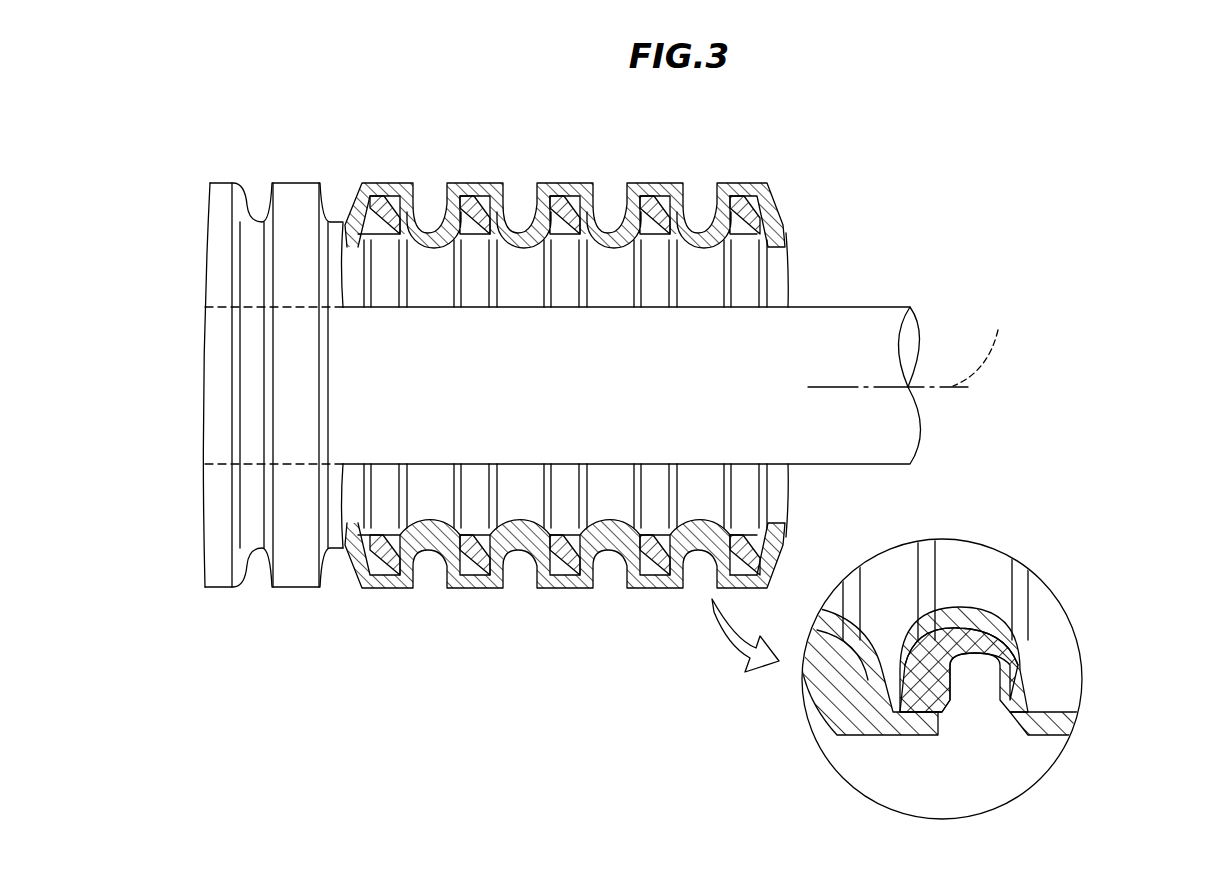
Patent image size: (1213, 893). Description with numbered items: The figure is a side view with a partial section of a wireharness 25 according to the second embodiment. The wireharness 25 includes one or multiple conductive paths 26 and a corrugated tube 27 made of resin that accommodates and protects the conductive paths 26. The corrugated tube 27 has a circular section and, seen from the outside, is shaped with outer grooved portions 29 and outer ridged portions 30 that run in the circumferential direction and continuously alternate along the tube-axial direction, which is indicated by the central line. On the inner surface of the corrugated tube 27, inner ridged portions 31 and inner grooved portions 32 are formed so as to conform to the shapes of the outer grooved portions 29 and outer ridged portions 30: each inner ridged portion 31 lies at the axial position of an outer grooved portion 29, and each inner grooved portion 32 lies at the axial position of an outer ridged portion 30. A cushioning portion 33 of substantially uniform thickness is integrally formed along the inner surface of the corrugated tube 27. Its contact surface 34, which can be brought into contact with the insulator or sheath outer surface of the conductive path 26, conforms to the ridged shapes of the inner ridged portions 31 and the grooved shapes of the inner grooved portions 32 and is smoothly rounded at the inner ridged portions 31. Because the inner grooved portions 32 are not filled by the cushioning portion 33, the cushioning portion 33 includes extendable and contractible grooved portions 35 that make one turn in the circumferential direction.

The wireharness 25 is at (912, 197).
The conductive path 26 is at (878, 422).
The corrugated tube 27 is at (298, 183).
The outer grooved portion 29 is at (697, 205).
The outer ridged portion 30 is at (748, 182).
The inner ridged portion 31 is at (695, 248).
The inner grooved portion 32 is at (760, 208).
The cushioning portion 33 is at (733, 243).
The contact surface 34 is at (699, 257).
The extendable and contractible grooved portion 35 is at (742, 233).